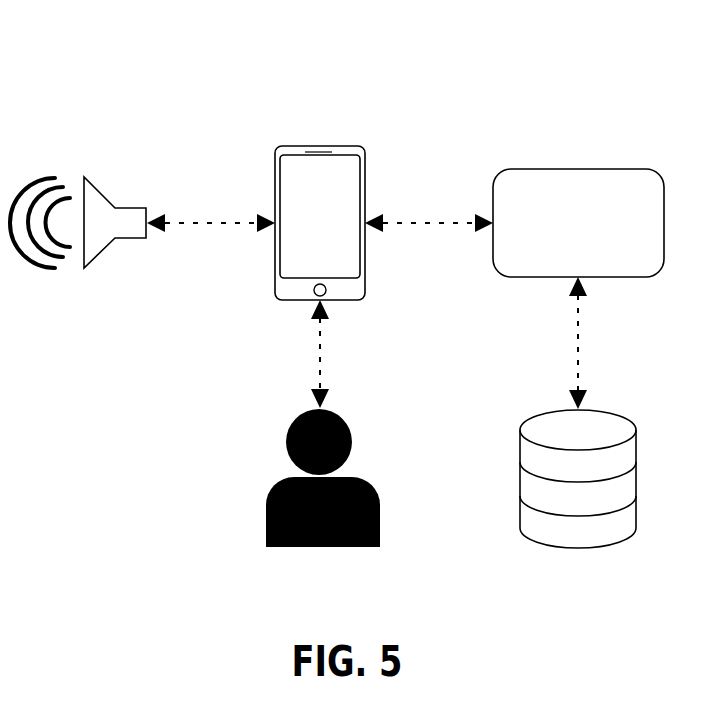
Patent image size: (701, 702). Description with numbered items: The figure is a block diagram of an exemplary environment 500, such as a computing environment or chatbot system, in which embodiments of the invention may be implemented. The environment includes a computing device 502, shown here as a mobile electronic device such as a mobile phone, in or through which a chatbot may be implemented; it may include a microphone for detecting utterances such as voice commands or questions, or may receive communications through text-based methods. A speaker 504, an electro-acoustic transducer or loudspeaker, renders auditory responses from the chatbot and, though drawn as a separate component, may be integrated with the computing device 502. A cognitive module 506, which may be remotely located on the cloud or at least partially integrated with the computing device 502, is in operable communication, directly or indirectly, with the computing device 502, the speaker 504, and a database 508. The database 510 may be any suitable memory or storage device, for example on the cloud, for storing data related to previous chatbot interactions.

The computing environment 500 is at (42, 72).
The computing device 502 is at (330, 145).
The speaker 504 is at (133, 207).
The cognitive module 506 is at (634, 168).
The database 508 is at (616, 411).
The database 510 is at (346, 419).